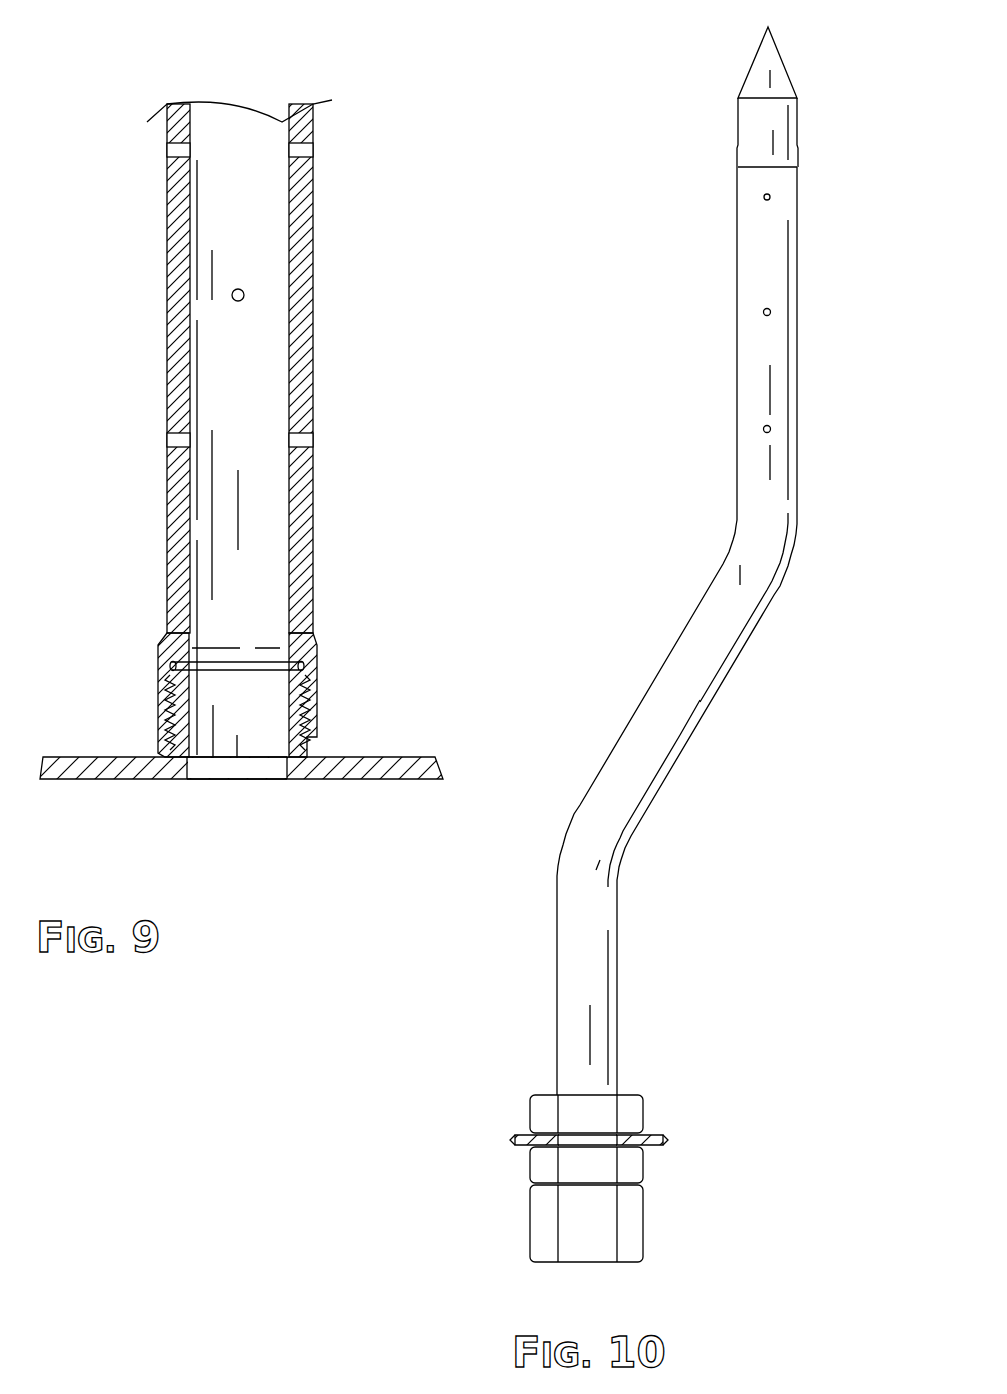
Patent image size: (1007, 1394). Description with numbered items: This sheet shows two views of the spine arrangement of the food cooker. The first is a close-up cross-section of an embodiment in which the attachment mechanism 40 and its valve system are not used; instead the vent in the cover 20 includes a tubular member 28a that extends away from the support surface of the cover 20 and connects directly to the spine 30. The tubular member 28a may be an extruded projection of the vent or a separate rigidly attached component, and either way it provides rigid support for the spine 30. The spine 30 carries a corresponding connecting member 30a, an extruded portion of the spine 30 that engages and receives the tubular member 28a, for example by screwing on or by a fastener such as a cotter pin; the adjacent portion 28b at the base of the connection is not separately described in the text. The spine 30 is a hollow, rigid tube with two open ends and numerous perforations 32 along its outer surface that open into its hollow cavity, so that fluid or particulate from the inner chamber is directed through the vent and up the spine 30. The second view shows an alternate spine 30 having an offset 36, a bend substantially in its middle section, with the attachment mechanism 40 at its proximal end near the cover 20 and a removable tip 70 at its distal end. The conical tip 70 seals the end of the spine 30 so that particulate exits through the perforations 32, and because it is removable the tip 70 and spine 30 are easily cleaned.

In FIG. 9, the cover 20 is at (88, 780).
In FIG. 10, the cover 20 is at (660, 1134).
In FIG. 9, the tubular member 28a is at (250, 768).
In FIG. 9, the threaded portion 28b is at (307, 748).
In FIG. 9, the spine 30 is at (313, 182).
In FIG. 10, the spine 30 is at (617, 945).
In FIG. 9, the connecting member 30a is at (317, 652).
In FIG. 9, the perforations 32 is at (245, 295).
In FIG. 10, the perforations 32 is at (763, 312).
In FIG. 10, the offset 36 is at (710, 708).
In FIG. 10, the attachment mechanism 40 is at (650, 1221).
In FIG. 10, the tip 70 is at (782, 53).